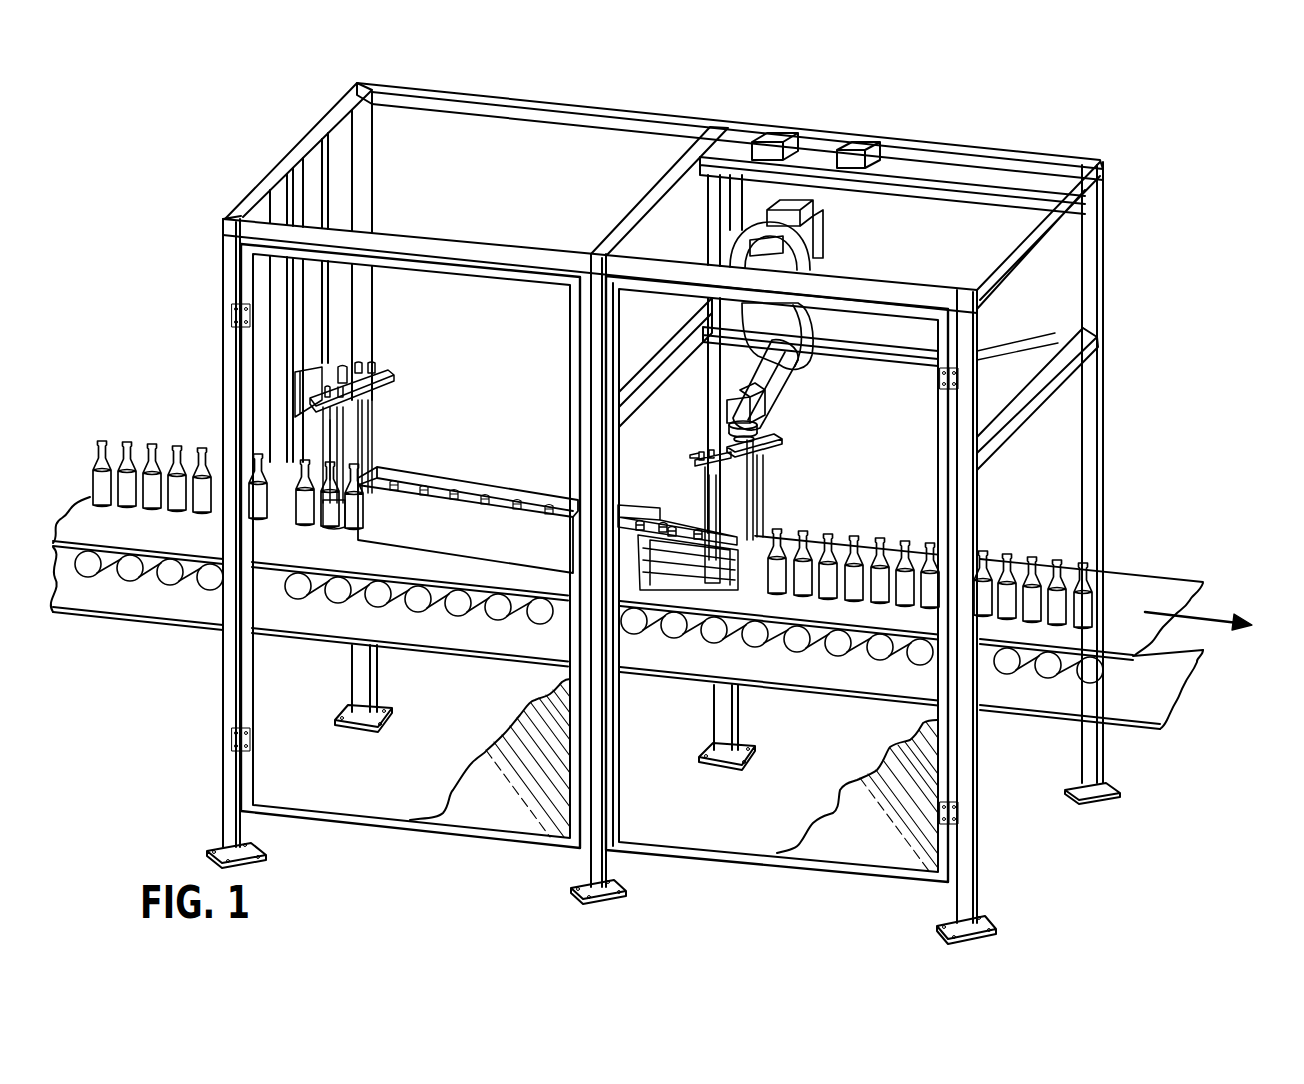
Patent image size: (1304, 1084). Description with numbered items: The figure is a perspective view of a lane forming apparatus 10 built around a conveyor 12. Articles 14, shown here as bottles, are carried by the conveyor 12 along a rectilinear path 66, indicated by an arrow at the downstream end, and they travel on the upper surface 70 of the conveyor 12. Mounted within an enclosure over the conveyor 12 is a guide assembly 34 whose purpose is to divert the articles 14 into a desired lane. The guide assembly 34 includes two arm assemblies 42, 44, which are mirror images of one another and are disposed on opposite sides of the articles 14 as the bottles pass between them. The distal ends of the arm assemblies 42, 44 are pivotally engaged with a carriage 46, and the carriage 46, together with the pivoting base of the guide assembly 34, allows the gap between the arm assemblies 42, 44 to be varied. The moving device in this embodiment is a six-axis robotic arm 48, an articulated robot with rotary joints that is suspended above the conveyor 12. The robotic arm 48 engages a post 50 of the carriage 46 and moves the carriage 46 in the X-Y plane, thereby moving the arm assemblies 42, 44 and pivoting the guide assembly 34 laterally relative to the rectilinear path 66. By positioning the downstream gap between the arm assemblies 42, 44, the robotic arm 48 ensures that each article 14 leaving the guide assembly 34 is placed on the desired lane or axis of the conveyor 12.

The lane forming apparatus 10 is at (197, 189).
The conveyor 12 is at (1126, 570).
The article 14 is at (126, 447).
The guide assembly 34 is at (503, 400).
The arm assembly 42 is at (438, 475).
The arm assembly 44 is at (489, 546).
The carriage 46 is at (764, 465).
The six-axis robotic arm 48 is at (808, 371).
The post 50 is at (757, 453).
The rectilinear path 66 is at (1200, 617).
The upper surface 70 is at (1140, 583).